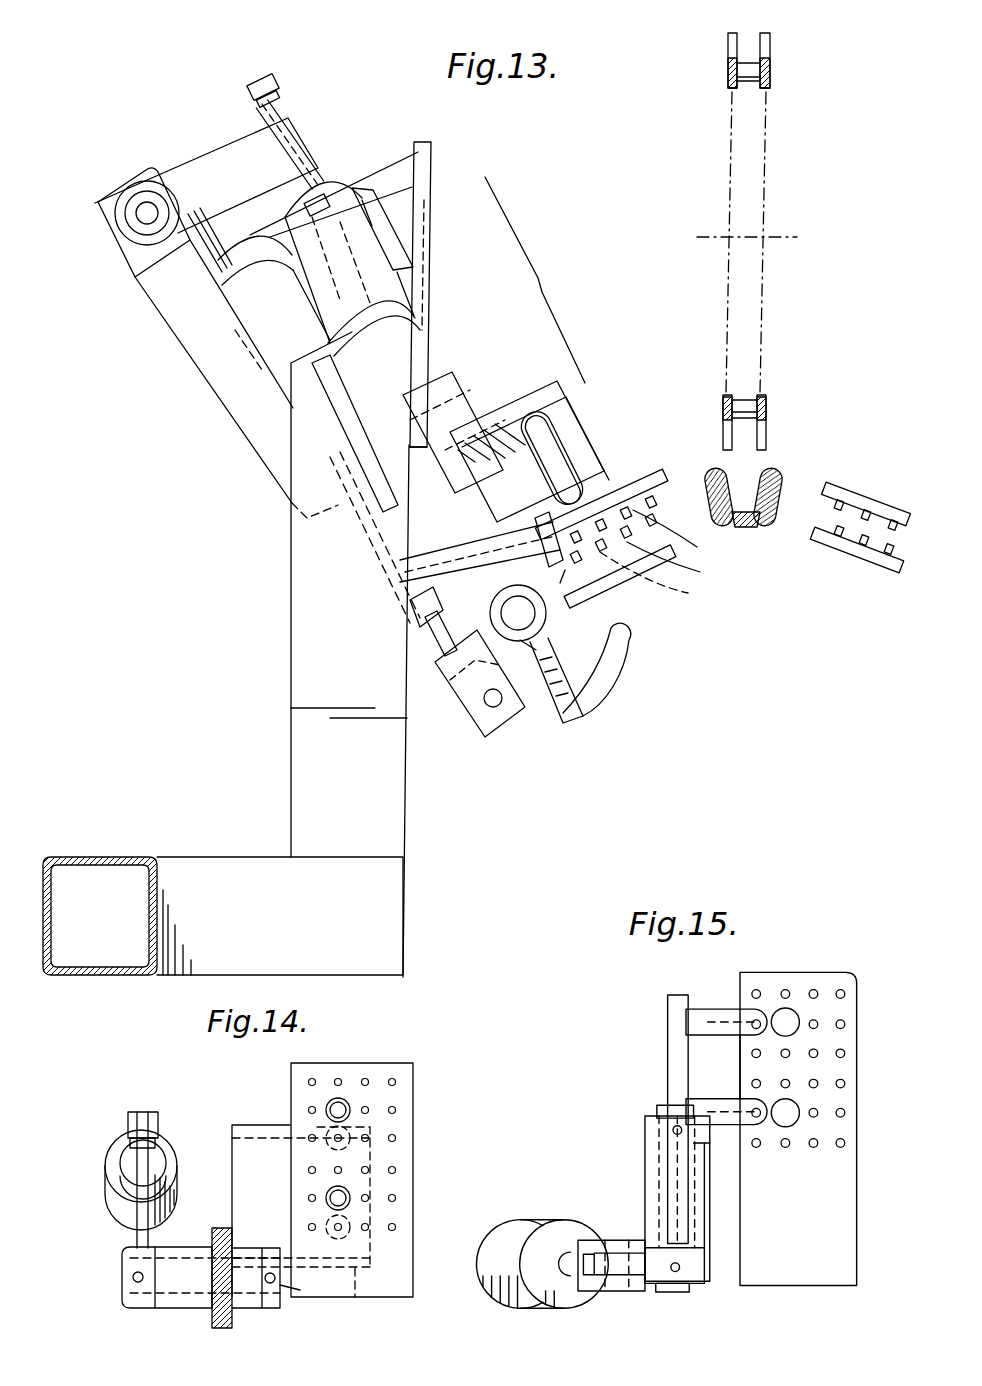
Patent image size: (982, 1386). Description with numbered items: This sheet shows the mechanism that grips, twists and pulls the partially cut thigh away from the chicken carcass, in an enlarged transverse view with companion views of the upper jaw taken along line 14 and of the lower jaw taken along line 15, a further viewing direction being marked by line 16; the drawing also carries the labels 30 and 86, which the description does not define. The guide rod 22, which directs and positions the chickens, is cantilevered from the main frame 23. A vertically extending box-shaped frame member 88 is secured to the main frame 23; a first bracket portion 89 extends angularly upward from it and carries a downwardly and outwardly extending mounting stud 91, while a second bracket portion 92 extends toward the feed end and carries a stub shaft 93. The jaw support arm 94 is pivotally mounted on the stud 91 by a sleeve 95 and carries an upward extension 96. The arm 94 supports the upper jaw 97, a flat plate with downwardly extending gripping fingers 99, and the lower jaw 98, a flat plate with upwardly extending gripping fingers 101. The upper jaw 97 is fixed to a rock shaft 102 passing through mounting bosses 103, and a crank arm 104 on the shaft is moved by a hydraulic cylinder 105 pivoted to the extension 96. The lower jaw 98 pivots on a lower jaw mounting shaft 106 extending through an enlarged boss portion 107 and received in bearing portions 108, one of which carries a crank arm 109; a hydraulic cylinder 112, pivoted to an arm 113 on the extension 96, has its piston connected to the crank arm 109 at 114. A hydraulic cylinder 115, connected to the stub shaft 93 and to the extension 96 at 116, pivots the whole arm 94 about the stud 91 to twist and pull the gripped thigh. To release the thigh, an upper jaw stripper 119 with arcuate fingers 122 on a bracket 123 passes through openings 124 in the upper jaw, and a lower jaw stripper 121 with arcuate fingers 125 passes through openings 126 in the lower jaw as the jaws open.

In FIG. 13, the guide rod 22 is at (775, 520).
In FIG. 13, the main frame 23 is at (95, 842).
In FIG. 13, the spool 30 is at (733, 45).
In FIG. 13, the plate 86 is at (535, 280).
In FIG. 13, the box-shaped frame member 88 is at (291, 645).
In FIG. 13, the first bracket portion 89 is at (423, 155).
In FIG. 13, the mounting stud 91 is at (378, 185).
In FIG. 13, the second bracket portion 92 is at (245, 423).
In FIG. 13, the stub shaft 93 is at (363, 432).
In FIG. 13, the jaw support arm 94 is at (470, 480).
In FIG. 15, the jaw support arm 94 is at (658, 1157).
In FIG. 13, the sleeve 95 is at (345, 182).
In FIG. 13, the upward extension 96 is at (256, 76).
In FIG. 13, the upper jaw 97 is at (640, 482).
In FIG. 14, the upper jaw 97 is at (410, 1092).
In FIG. 13, the lower jaw 98 is at (868, 565).
In FIG. 15, the lower jaw 98 is at (828, 982).
In FIG. 13, the gripping fingers 99 is at (862, 512).
In FIG. 14, the gripping fingers 99 is at (312, 1135).
In FIG. 13, the gripping fingers 101 is at (603, 548).
In FIG. 15, the gripping fingers 101 is at (788, 984).
In FIG. 13, the rock shaft 102 is at (433, 548).
In FIG. 14, the rock shaft 102 is at (280, 1290).
In FIG. 13, the mounting bosses 103 is at (433, 645).
In FIG. 14, the mounting bosses 103 is at (185, 1300).
In FIG. 13, the crank arm 104 is at (408, 600).
In FIG. 14, the crank arm 104 is at (135, 1205).
In FIG. 13, the hydraulic cylinder 105 is at (267, 353).
In FIG. 14, the hydraulic cylinder 105 is at (120, 1138).
In FIG. 13, the lower jaw mounting shaft 106 is at (530, 612).
In FIG. 15, the lower jaw mounting shaft 106 is at (662, 1263).
In FIG. 15, the enlarged boss portion 107 is at (632, 1128).
In FIG. 13, the bearing portions 108 is at (548, 620).
In FIG. 15, the bearing portions 108 is at (640, 1100).
In FIG. 13, the crank arm 109 is at (536, 668).
In FIG. 15, the crank arm 109 is at (615, 1248).
In FIG. 13, the hydraulic cylinder 112 is at (163, 310).
In FIG. 15, the hydraulic cylinder 112 is at (525, 1270).
In FIG. 13, the arm 113 is at (228, 140).
In FIG. 13, the pivotal connection 114 is at (485, 715).
In FIG. 13, the hydraulic cylinder 115 is at (395, 283).
In FIG. 13, the pivotal connection 116 is at (281, 92).
In FIG. 13, the upper jaw stripper 119 is at (592, 403).
In FIG. 14, the upper jaw stripper 119 is at (232, 1142).
In FIG. 13, the lower jaw stripper 121 is at (598, 722).
In FIG. 15, the lower jaw stripper 121 is at (650, 1005).
In FIG. 13, the arcuate fingers 122 is at (565, 447).
In FIG. 14, the arcuate fingers 122 is at (342, 1113).
In FIG. 13, the bracket 123 is at (497, 422).
In FIG. 14, the openings 124 is at (342, 1100).
In FIG. 13, the arcuate fingers 125 is at (620, 690).
In FIG. 15, the arcuate fingers 125 is at (688, 1002).
In FIG. 13, the openings 126 is at (663, 579).
In FIG. 15, the openings 126 is at (773, 1015).
In FIG. 13, the section line 14— 14 is at (368, 593).
In FIG. 13, the section line 15— 15 is at (500, 765).
In FIG. 13, the section line 16— 16 is at (92, 215).